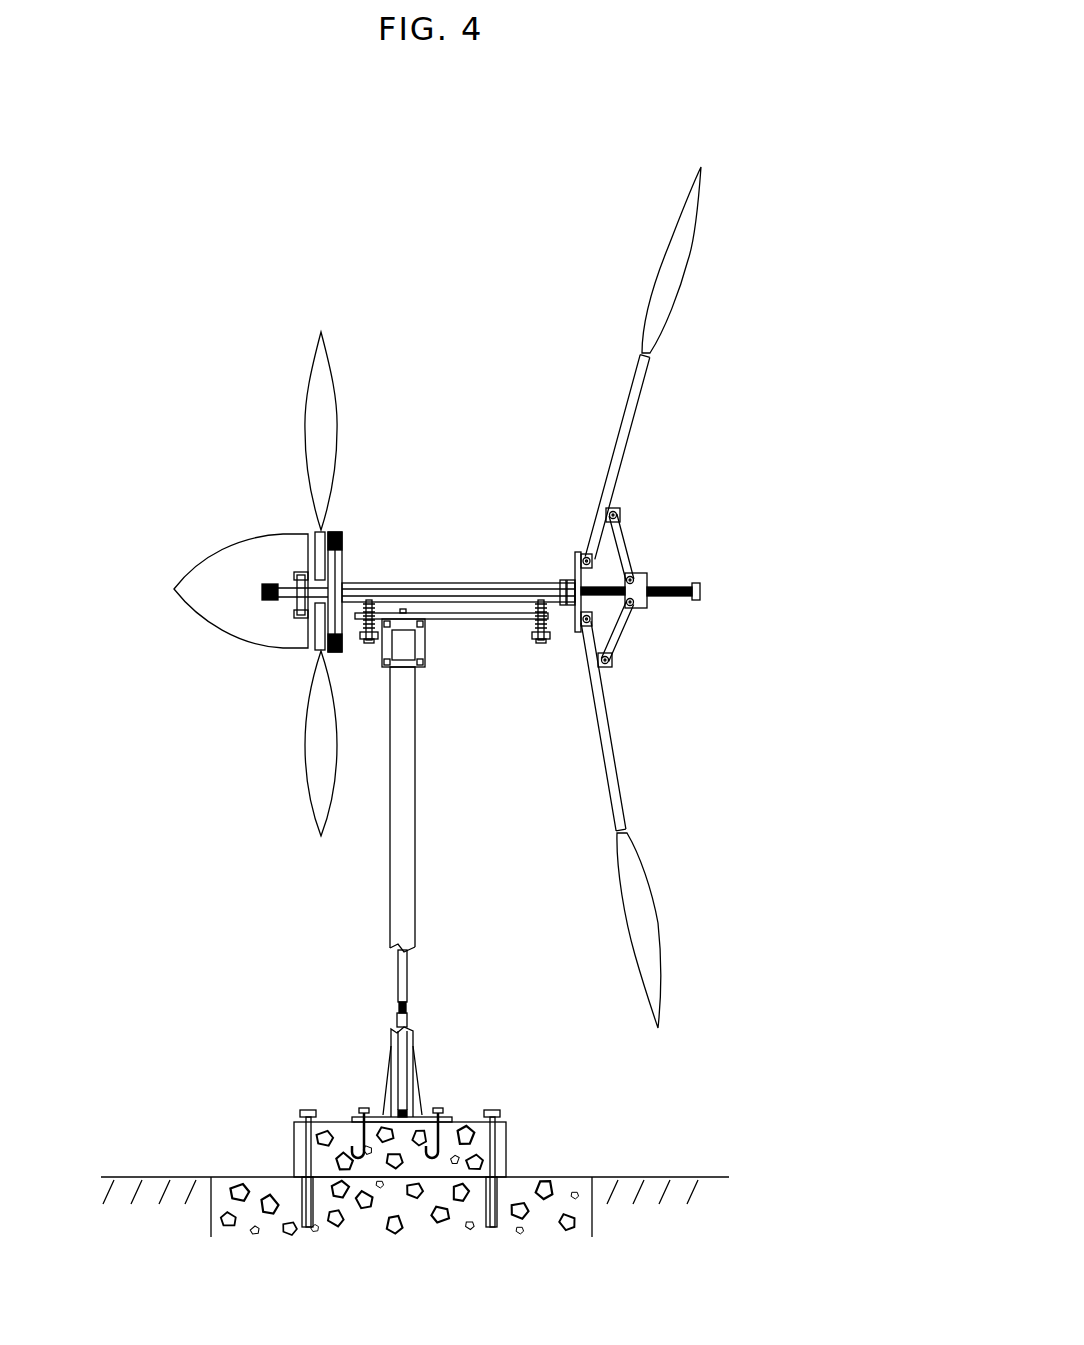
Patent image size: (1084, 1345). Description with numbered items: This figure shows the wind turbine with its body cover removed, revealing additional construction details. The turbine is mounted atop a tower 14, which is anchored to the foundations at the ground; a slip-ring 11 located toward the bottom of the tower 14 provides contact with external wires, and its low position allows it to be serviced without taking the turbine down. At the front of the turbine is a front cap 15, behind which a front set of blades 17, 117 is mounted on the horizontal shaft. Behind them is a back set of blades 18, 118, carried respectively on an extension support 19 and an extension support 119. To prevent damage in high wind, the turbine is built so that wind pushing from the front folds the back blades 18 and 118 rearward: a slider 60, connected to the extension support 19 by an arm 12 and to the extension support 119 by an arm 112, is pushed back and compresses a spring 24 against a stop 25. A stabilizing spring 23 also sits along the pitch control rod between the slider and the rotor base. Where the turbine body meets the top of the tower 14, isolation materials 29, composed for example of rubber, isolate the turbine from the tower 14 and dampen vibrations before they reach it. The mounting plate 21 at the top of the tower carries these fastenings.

The slip-ring 11 is at (413, 1083).
The arm 12 is at (623, 630).
The tower 14 is at (385, 903).
The front cap 15 is at (232, 545).
The blade 17 is at (303, 802).
The blade 18 is at (665, 953).
The extension support 19 is at (632, 800).
The mounting plate 21 is at (475, 618).
The stabilizing spring 23 is at (593, 637).
The spring 24 is at (670, 583).
The stop 25 is at (703, 593).
The isolation materials 29 is at (535, 610).
The slider 60 is at (650, 608).
The arm 112 is at (625, 537).
The blade 117 is at (305, 360).
The blade 118 is at (703, 212).
The extension support 119 is at (640, 412).